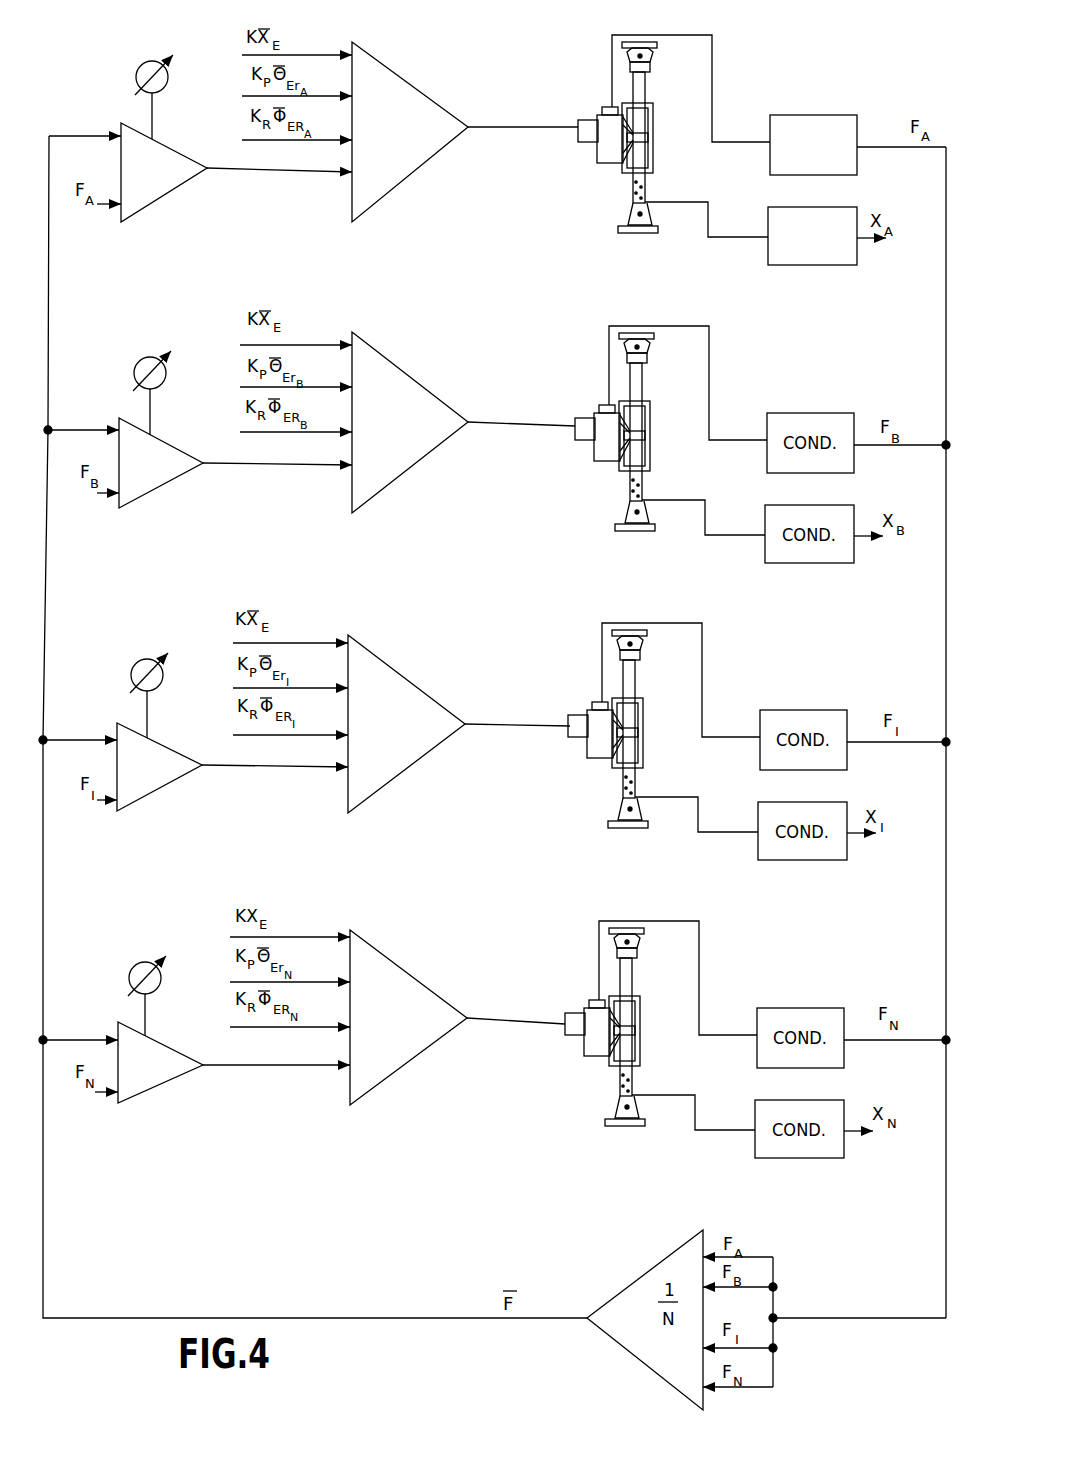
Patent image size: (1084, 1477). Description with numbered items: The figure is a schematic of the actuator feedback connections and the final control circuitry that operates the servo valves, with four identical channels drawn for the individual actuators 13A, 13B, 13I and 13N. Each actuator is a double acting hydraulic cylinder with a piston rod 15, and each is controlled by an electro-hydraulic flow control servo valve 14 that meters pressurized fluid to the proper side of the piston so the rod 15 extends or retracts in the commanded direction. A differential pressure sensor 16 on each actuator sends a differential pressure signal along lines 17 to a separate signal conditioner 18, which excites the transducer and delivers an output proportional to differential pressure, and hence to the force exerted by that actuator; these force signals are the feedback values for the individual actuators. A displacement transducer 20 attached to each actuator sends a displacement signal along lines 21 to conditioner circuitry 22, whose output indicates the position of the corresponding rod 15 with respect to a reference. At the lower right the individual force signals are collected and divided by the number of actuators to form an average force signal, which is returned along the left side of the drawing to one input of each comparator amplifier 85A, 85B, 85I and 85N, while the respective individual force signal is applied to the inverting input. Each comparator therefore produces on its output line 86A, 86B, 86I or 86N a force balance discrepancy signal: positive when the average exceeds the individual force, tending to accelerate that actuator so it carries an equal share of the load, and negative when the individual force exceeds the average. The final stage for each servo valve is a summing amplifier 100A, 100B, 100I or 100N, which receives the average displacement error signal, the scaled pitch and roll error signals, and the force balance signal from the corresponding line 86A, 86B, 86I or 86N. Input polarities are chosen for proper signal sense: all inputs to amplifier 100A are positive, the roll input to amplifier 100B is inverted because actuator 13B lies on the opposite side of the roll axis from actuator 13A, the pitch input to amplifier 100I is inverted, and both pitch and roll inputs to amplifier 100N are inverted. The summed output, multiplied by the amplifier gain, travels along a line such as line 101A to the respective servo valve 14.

The actuator 13A is at (653, 148).
The actuator 13B is at (660, 432).
The actuator 13I is at (650, 729).
The actuator 13N is at (657, 1027).
The electro-hydraulic flow control servo valve 14 is at (590, 143).
The piston rod 15 is at (646, 90).
The differential pressure sensor 16 is at (604, 107).
The lines 17 is at (713, 99).
The signal conditioner 18 is at (808, 115).
The displacement transducer 20 is at (633, 190).
The lines 21 is at (720, 238).
The conditioner circuitry 22 is at (827, 265).
The comparator amplifier 85A is at (147, 207).
The comparator amplifier 85B is at (167, 484).
The comparator amplifier 85I is at (167, 786).
The comparator amplifier 85N is at (153, 1088).
The output line 86A is at (248, 172).
The output line 86B is at (237, 464).
The output line 86I is at (237, 766).
The output line 86N is at (235, 1066).
The summing amplifier 100A is at (397, 76).
The summing amplifier 100B is at (406, 374).
The summing amplifier 100I is at (406, 678).
The summing amplifier 100N is at (407, 973).
The output line 101A is at (447, 144).